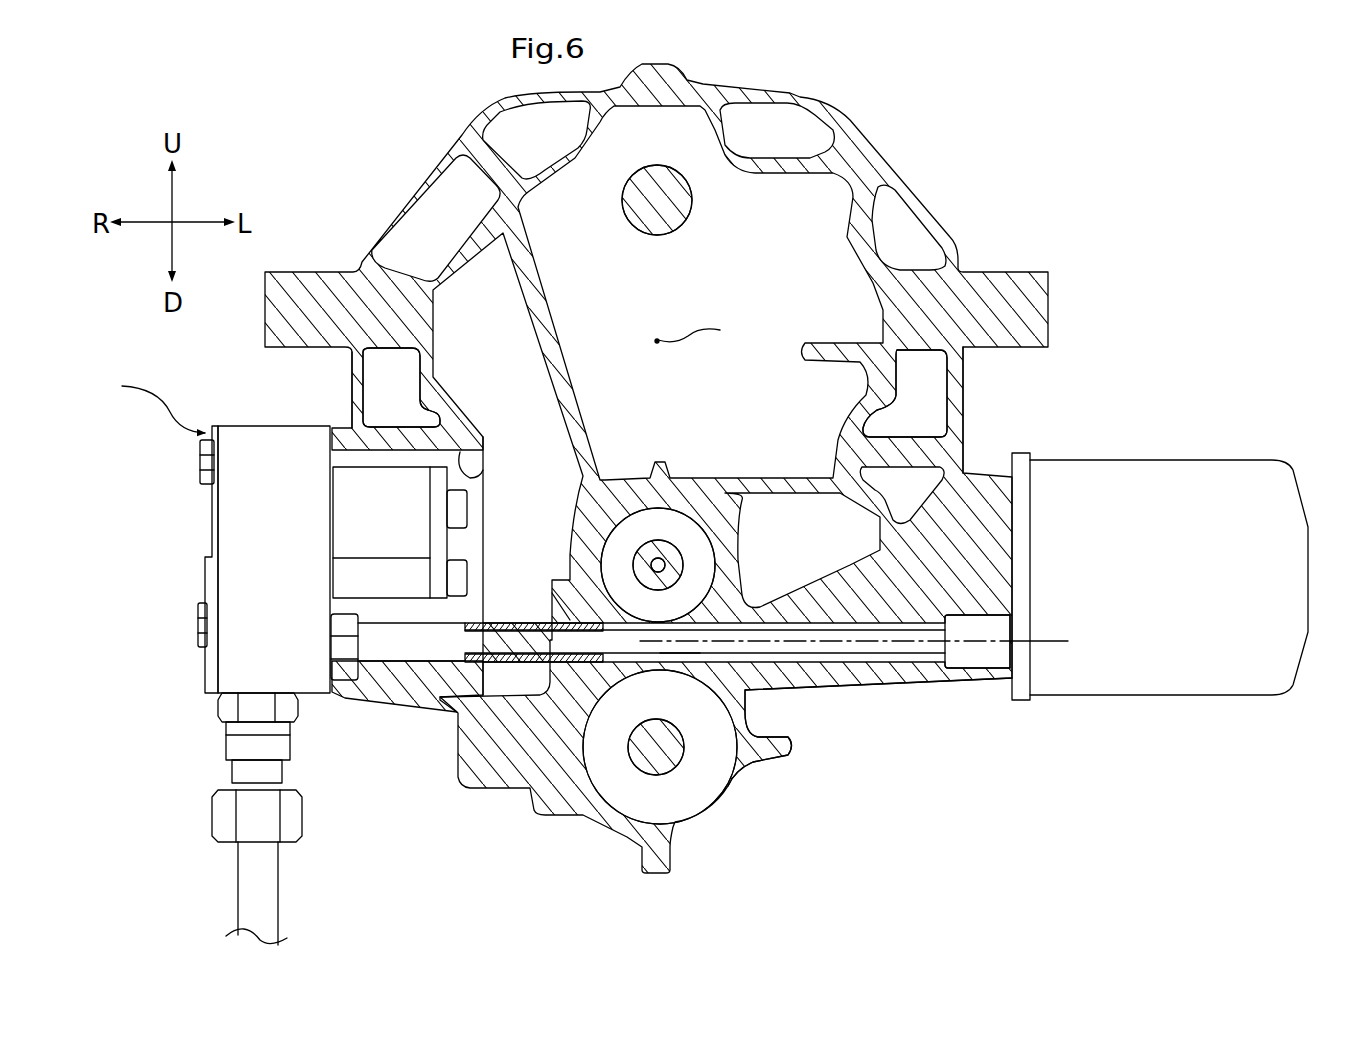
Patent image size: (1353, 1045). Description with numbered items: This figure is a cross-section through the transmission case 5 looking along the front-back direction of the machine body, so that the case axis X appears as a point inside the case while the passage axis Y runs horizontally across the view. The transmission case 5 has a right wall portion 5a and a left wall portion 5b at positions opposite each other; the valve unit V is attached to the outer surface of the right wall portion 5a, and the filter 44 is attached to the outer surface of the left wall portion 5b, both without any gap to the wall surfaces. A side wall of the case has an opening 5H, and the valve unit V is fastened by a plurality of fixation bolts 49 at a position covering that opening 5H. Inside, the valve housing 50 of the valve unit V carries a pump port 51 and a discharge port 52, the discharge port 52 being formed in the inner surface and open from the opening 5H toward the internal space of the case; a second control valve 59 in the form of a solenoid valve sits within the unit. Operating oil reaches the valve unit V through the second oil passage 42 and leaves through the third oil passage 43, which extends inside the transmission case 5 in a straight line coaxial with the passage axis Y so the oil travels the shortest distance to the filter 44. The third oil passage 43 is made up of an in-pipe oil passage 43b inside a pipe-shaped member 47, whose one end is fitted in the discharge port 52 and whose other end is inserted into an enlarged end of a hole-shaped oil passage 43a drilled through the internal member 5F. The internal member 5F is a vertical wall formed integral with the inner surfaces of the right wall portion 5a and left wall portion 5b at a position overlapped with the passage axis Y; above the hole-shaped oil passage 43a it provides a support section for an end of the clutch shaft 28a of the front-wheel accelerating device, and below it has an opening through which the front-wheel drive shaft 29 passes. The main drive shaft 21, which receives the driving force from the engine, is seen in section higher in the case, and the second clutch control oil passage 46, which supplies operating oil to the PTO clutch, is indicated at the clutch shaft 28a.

The transmission case 5 is at (891, 162).
The right wall portion 5a is at (352, 384).
The left wall portion 5b is at (964, 396).
The opening 5H is at (482, 474).
The internal member 5F is at (798, 682).
The main drive shaft 21 is at (680, 232).
The clutch shaft 28a is at (672, 548).
The front-wheel drive shaft 29 is at (686, 764).
The second oil passage 42 is at (242, 895).
The third oil passage 43 is at (850, 656).
The hole-shaped oil passage 43a is at (683, 650).
The in-pipe oil passage 43b is at (508, 628).
The filter 44 is at (1118, 479).
The second clutch control oil passage 46 is at (665, 566).
The pipe-shaped member 47 is at (428, 662).
The fixation bolts 49 is at (200, 460).
The valve housing 50 is at (248, 432).
The pump port 51 is at (226, 706).
The discharge port 52 is at (340, 632).
The second control valve 59 is at (415, 505).
The valve unit V is at (151, 402).
The case axis X is at (698, 334).
The passage axis Y is at (1050, 643).